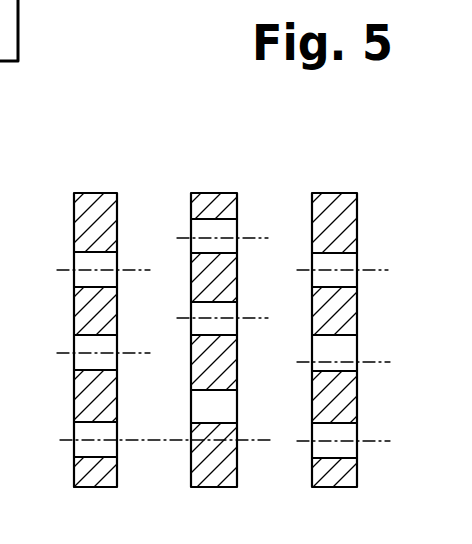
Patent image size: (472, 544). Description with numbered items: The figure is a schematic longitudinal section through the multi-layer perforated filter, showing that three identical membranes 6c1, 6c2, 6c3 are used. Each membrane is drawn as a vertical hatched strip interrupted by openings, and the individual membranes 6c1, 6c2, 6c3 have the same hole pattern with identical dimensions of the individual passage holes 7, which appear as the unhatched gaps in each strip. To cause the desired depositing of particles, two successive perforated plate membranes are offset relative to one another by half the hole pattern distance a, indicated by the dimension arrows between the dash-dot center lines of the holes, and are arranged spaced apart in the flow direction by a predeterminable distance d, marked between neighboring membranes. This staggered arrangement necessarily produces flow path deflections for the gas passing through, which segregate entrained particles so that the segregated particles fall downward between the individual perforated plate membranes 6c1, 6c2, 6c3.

The perforated plate membrane 6c1 is at (98, 202).
The perforated plate membrane 6c2 is at (216, 202).
The perforated plate membrane 6c3 is at (337, 202).
The passage hole 7 is at (80, 342).
The hole pattern distance a is at (136, 353).
The distance d is at (191, 478).